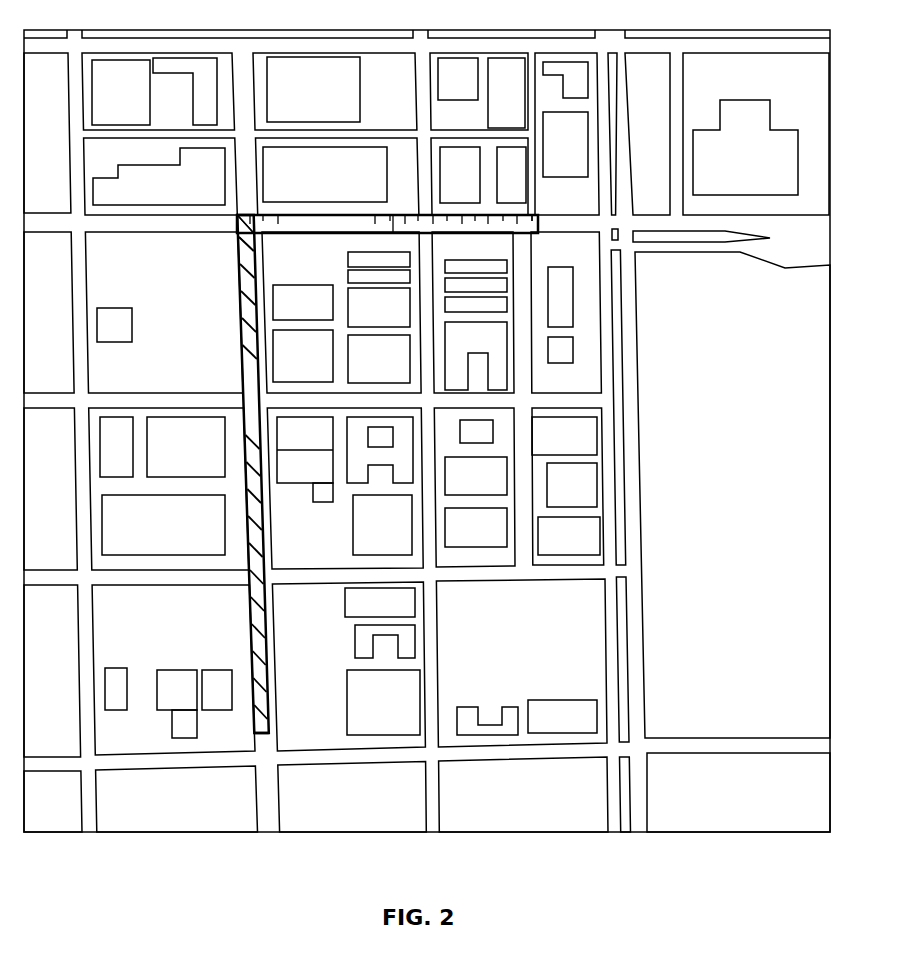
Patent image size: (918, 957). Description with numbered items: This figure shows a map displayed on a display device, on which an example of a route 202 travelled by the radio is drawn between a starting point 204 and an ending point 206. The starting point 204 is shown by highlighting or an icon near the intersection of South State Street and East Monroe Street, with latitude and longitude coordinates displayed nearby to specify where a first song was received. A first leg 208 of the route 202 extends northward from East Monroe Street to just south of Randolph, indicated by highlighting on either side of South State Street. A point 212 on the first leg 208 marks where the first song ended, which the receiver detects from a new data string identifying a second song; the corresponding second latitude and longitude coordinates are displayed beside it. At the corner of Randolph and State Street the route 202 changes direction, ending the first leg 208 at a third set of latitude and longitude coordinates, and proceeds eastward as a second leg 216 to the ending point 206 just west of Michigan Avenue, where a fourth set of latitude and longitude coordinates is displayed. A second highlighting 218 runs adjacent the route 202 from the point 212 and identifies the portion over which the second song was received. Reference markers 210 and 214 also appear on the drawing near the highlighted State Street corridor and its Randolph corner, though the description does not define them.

The route 202 is at (153, 147).
The starting point 204 is at (277, 742).
The ending point 206 is at (550, 235).
The first leg 208 is at (268, 643).
The hatched corridor of first route segment 210 is at (257, 337).
The point on the first leg where the first song ended 212 is at (253, 234).
The start point of first route segment 214 is at (245, 213).
The second leg 216 is at (422, 215).
The second highlighting 218 is at (393, 213).